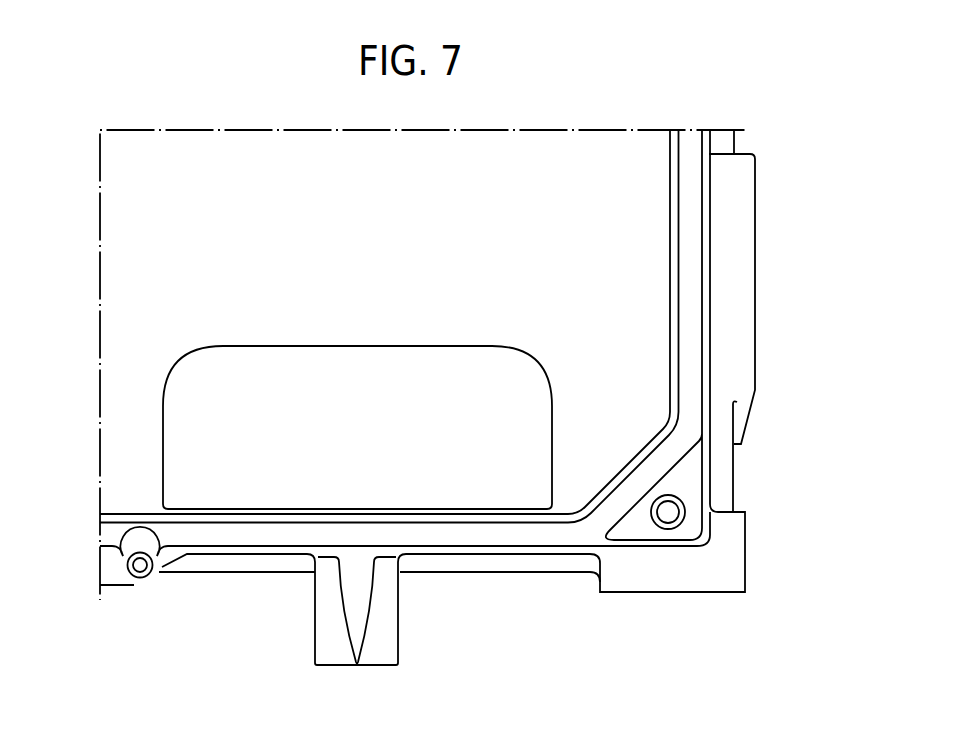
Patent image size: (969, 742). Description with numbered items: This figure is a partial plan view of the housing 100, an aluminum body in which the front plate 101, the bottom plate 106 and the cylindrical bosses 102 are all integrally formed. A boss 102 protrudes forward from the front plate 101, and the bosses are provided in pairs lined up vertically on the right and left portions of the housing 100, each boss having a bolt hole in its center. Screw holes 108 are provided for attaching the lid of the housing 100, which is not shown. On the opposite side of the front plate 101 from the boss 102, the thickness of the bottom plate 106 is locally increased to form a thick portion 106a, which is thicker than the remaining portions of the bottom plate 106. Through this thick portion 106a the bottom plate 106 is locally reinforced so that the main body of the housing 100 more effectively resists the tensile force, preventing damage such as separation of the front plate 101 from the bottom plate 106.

The housing 100 is at (688, 288).
The front plate 101 is at (253, 533).
The boss 102 is at (380, 647).
The bottom plate 106 is at (562, 262).
The thick portion 106a is at (382, 439).
The screw hole 108 is at (140, 567).